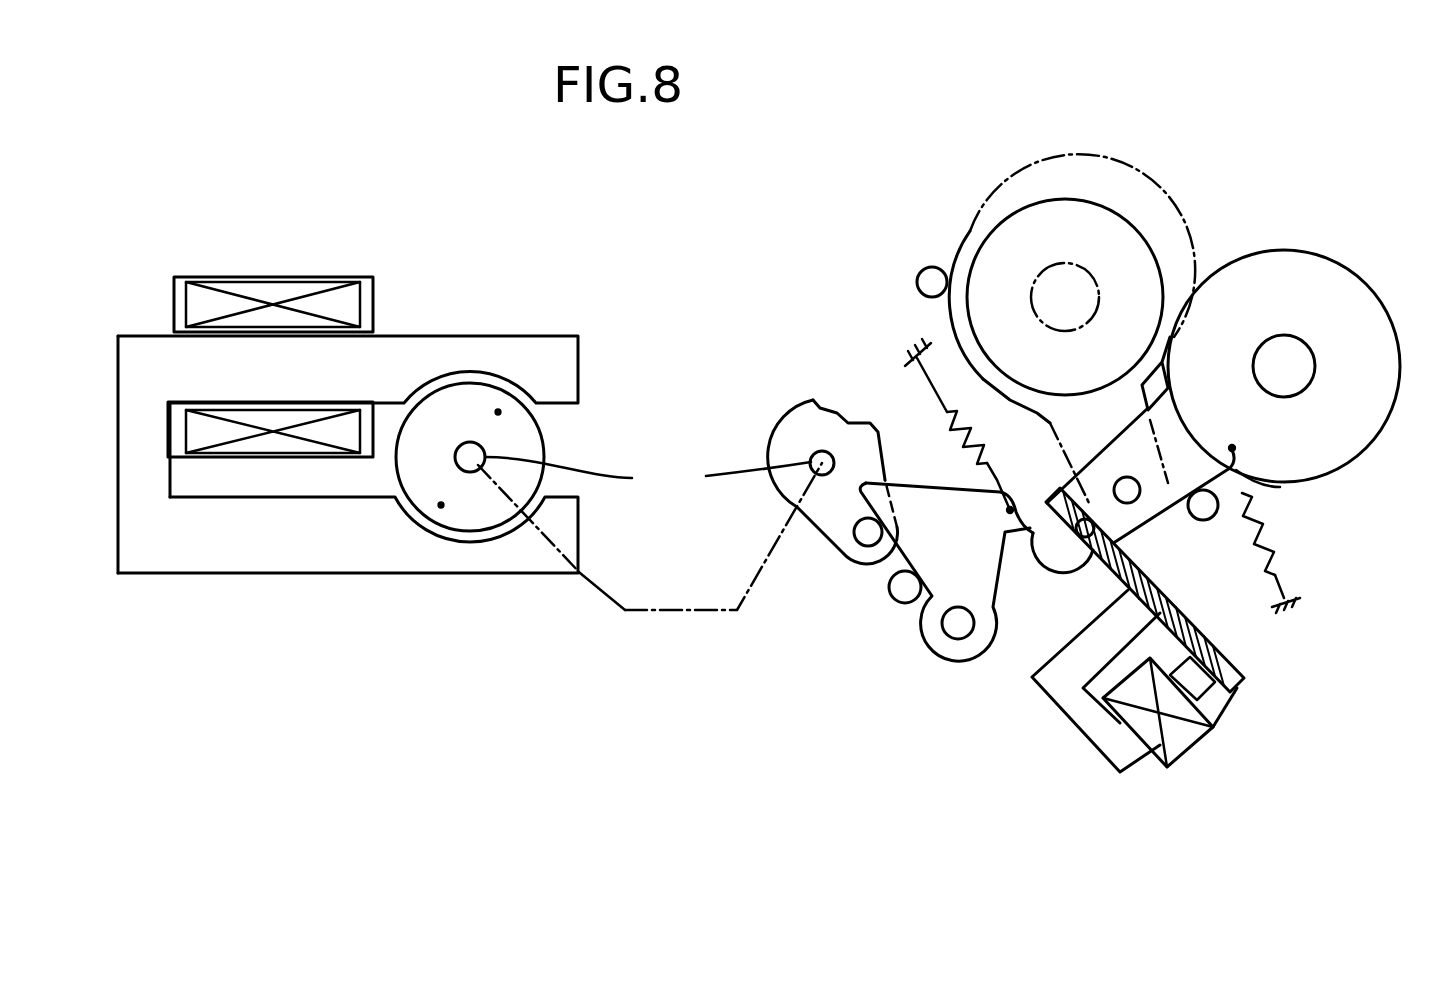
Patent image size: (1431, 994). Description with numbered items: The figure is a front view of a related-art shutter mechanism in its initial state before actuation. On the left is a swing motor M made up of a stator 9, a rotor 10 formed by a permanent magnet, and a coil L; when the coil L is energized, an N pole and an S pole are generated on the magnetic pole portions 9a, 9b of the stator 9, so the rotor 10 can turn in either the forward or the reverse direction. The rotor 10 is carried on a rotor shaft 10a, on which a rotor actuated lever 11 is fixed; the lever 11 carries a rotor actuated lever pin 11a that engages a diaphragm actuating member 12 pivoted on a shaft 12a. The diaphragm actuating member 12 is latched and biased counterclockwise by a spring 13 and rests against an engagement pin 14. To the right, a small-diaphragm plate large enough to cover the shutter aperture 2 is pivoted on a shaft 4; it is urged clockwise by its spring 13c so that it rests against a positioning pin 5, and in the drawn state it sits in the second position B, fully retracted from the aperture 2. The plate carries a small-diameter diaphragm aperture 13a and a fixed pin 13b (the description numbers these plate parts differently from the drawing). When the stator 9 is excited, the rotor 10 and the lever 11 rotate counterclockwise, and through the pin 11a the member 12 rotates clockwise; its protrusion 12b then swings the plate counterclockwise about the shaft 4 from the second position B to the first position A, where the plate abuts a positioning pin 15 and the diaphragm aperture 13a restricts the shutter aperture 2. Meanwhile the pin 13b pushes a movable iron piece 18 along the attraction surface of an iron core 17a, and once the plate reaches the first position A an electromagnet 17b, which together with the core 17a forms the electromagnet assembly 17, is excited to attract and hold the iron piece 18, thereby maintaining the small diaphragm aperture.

The shutter aperture 2 is at (1130, 213).
The shaft 4 is at (1135, 498).
The positioning pin 5 is at (1212, 520).
The stator 9 is at (140, 425).
The magnetic pole portion 9a is at (512, 358).
The magnetic pole portion 9b is at (512, 556).
The rotor 10 is at (545, 447).
The rotor shaft 10a is at (638, 526).
The rotor actuated lever 11 is at (840, 520).
The rotor actuated lever pin 11a is at (868, 546).
The diaphragm actuating member 12 is at (977, 663).
The shaft 12a is at (947, 633).
The protrusion 12b is at (1013, 532).
The spring 13 is at (1360, 273).
The gear shaft 13a is at (1313, 371).
The lever arm 13b is at (1075, 495).
The spring 13c is at (1270, 518).
The engagement pin 14 is at (900, 603).
The positioning pin 15 is at (918, 282).
The solenoid 17 is at (1265, 803).
The iron core 17a is at (1073, 708).
The electromagnet 17b is at (1197, 750).
The movable iron piece 18 is at (1240, 690).
The first position A is at (968, 230).
The second position B is at (1385, 430).
The coil L is at (310, 277).
The swing motor M is at (263, 575).
The N pole N is at (508, 427).
The S pole S is at (453, 516).